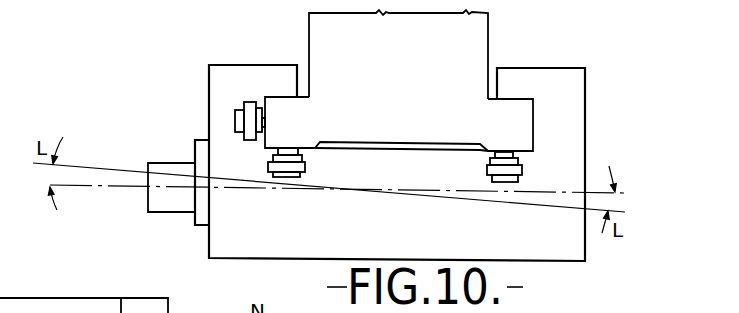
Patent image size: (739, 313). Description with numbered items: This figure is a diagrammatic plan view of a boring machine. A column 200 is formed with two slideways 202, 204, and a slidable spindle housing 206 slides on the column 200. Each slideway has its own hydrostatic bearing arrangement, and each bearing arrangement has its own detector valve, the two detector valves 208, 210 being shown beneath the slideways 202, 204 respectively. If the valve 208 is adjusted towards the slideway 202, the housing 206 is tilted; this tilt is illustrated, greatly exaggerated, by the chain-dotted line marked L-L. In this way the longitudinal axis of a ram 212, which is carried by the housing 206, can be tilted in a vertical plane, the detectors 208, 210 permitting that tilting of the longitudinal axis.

The column 200 is at (470, 34).
The slideway 202 is at (292, 105).
The slideway 204 is at (505, 118).
The slidable spindle housing 206 is at (310, 245).
The detector valve 208 is at (295, 170).
The detector valve 210 is at (505, 170).
The ram 212 is at (178, 167).